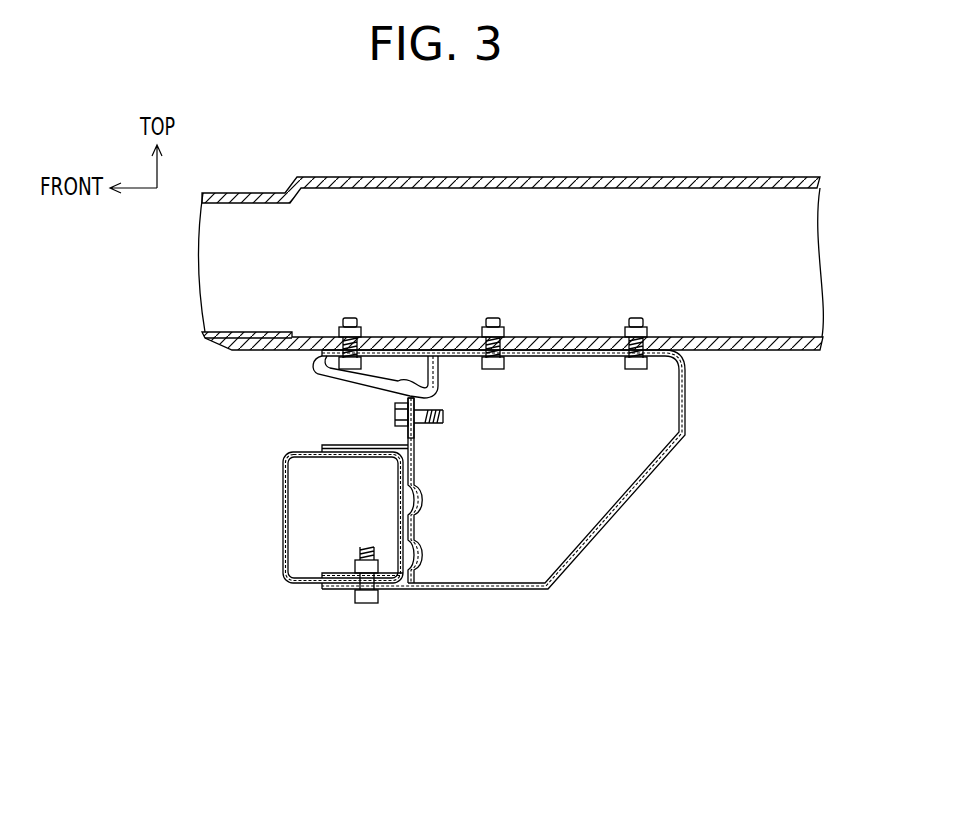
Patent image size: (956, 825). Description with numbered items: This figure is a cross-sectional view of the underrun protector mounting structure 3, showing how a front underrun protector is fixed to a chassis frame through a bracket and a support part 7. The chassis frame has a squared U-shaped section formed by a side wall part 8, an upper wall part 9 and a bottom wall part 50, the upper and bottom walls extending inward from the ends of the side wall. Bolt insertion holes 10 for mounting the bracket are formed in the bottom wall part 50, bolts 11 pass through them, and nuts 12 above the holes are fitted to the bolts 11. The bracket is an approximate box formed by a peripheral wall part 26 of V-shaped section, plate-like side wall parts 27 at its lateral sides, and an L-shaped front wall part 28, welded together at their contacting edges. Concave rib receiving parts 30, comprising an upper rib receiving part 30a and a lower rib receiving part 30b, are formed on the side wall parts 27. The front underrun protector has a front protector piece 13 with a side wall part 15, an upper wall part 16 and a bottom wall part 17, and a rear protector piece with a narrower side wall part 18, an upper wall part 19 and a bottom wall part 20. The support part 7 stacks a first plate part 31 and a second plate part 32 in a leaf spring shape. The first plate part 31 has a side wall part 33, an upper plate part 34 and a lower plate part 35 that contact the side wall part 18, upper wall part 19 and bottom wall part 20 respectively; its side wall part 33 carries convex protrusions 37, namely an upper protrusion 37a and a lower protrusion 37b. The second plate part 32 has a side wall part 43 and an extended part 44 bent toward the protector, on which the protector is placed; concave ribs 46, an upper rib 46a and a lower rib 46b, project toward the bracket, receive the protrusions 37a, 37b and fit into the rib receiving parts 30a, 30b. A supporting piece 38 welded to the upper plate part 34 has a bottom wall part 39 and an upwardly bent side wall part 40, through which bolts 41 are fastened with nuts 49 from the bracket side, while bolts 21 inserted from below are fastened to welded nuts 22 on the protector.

The underrun protector mounting structure 3 is at (745, 552).
The support part 7 is at (412, 590).
The side wall part 8 is at (532, 257).
The upper wall part 9 is at (767, 177).
The bolt insertion holes for mounting the bracket 10 is at (364, 338).
The bolts 11 is at (466, 305).
The nuts 12 is at (338, 331).
The protector piece 13 is at (290, 455).
The side wall part 15 is at (298, 534).
The upper wall part 16 is at (318, 450).
The bottom wall part 17 is at (292, 583).
The side wall part 18 is at (400, 516).
The upper wall part 19 is at (342, 458).
The bottom wall part 20 is at (293, 575).
The bolts 21 is at (370, 629).
The nuts 22 is at (378, 588).
The peripheral wall part 26 is at (495, 469).
The side wall parts 27 is at (641, 486).
The front wall part 28 is at (442, 375).
The rib receiving parts 30 is at (474, 523).
The upper rib receiving part 30a is at (424, 500).
The lower rib receiving part 30b is at (425, 550).
The first plate part 31 is at (338, 588).
The second plate part 32 is at (347, 592).
The side wall part 33 is at (418, 525).
The upper plate part 34 is at (318, 447).
The lower plate part 35 is at (378, 598).
The protrusions 37 is at (235, 518).
The upper protrusion 37a is at (284, 500).
The lower protrusion 37b is at (284, 560).
The supporting piece 38 is at (395, 416).
The bottom wall part 39 is at (345, 445).
The side wall part 40 is at (418, 427).
The bolts 41 is at (378, 392).
The side wall part 43 is at (417, 456).
The extended part 44 is at (398, 586).
The ribs 46 is at (477, 539).
The upper rib 46a is at (477, 488).
The lower rib 46b is at (477, 580).
The nuts 49 is at (420, 412).
The bottom wall part 50 is at (727, 337).